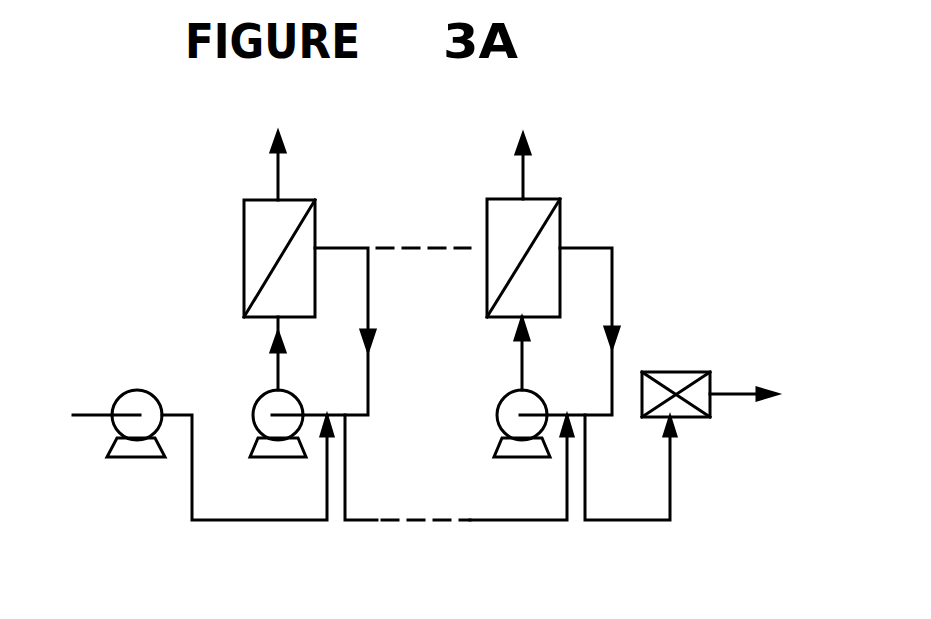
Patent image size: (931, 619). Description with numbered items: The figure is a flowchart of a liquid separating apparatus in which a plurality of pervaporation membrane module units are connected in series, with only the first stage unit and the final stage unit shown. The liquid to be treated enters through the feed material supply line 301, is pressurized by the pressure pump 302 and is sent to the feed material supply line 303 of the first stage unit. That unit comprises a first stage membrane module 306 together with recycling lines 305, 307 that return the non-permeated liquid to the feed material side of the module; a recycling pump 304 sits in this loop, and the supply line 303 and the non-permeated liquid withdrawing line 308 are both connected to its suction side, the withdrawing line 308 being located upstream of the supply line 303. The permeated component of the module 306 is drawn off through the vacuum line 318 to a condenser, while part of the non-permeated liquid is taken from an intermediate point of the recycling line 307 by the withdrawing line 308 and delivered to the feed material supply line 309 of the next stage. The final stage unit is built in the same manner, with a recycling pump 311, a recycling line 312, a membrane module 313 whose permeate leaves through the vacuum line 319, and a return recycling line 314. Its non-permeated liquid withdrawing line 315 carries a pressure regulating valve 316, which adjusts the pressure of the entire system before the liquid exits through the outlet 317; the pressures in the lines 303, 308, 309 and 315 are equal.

The feed material supply line 301 is at (80, 413).
The pressure pump 302 is at (137, 390).
The feed material supply line of the first stage unit 303 is at (248, 520).
The recycling pump 304 is at (253, 420).
The recycling line 305 is at (278, 365).
The first stage membrane module 306 is at (244, 280).
The recycling line 307 is at (348, 248).
The non-permeated liquid withdrawing line 308 is at (362, 520).
The feed material supply line 309 is at (517, 520).
The recycling pump 311 is at (497, 418).
The recycling line 312 is at (522, 363).
The membrane module 313 is at (487, 236).
The recycling line 314 is at (583, 248).
The non-permeated liquid withdrawing line 315 is at (623, 520).
The pressure regulating valve 316 is at (677, 372).
The outlet line 317 is at (725, 394).
The vacuum line 318 is at (278, 172).
The vacuum line 319 is at (523, 172).